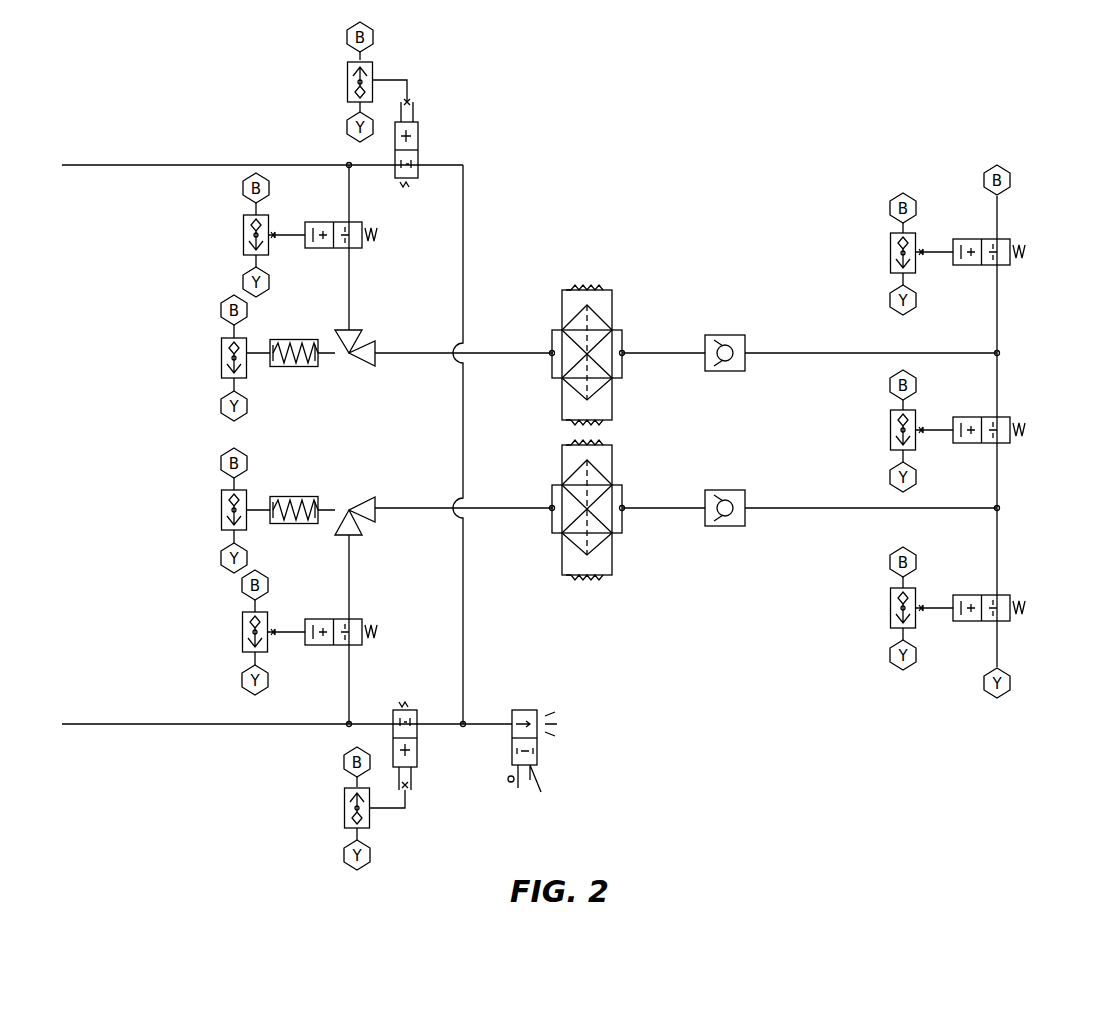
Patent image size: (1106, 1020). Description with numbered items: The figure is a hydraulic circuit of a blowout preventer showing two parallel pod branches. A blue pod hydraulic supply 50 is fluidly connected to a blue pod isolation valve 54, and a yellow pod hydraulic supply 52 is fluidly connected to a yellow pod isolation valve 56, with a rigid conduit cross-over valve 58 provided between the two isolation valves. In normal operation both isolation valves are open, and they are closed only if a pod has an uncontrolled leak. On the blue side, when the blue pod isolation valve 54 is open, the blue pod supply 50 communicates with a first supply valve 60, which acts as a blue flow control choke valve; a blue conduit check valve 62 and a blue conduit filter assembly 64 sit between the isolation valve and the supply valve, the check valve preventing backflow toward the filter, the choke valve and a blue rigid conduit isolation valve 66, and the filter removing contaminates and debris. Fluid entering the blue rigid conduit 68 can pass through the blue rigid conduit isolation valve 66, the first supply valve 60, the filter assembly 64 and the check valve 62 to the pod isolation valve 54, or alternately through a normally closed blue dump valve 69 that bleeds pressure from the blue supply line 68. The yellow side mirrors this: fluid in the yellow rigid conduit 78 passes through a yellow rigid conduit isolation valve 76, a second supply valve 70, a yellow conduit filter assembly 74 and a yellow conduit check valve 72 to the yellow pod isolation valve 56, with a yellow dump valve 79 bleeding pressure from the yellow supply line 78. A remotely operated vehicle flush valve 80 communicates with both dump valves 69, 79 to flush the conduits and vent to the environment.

The blue pod hydraulic supply 50 is at (998, 164).
The yellow pod hydraulic supply 52 is at (997, 699).
The blue pod isolation valve 54 is at (886, 251).
The yellow pod isolation valve 56 is at (886, 607).
The rigid conduit cross-over valve 58 is at (886, 429).
The first supply valve 60 is at (217, 354).
The blue conduit check valve 62 is at (722, 335).
The blue conduit filter assembly 64 is at (620, 296).
The blue rigid conduit isolation valve 66 is at (238, 236).
The blue rigid conduit 68 is at (155, 163).
The blue dump valve 69 is at (343, 77).
The second supply valve 70 is at (217, 511).
The yellow conduit check valve 72 is at (722, 528).
The yellow conduit filter assembly 74 is at (553, 548).
The yellow rigid conduit isolation valve 76 is at (238, 633).
The yellow rigid conduit 78 is at (153, 727).
The yellow dump valve 79 is at (341, 809).
The ROV flush valve 80 is at (557, 757).